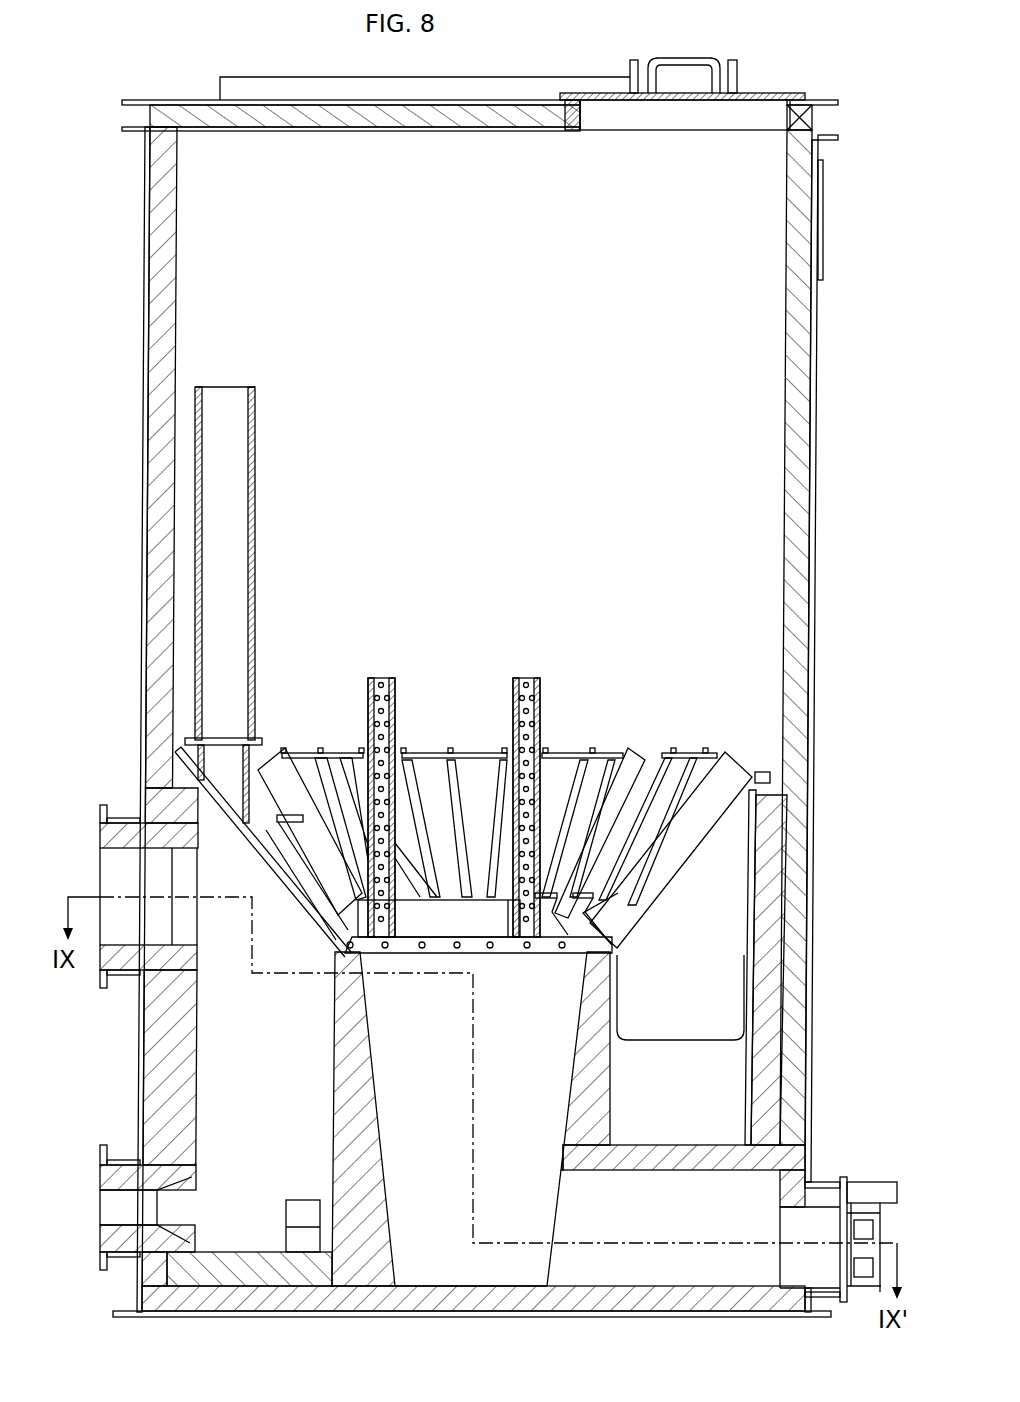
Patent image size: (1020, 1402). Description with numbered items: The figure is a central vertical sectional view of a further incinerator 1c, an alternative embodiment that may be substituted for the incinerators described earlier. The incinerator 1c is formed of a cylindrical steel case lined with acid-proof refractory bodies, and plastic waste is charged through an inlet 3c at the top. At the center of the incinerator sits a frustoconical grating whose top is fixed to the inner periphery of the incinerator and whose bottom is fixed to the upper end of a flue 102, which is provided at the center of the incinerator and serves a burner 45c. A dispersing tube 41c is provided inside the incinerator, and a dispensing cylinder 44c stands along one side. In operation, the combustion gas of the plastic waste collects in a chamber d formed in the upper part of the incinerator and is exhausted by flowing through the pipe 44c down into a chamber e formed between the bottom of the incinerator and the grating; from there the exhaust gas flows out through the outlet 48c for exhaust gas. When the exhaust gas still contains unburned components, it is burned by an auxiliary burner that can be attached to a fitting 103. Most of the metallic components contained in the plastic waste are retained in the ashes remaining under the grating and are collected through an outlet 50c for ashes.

The incinerator 1c is at (816, 541).
The inlet 3c is at (678, 122).
The chamber d is at (750, 367).
The dispensing cylinder 44c is at (235, 480).
The dispersing tube 41c is at (381, 690).
The outlet for exhaust gas 48c is at (117, 873).
The chamber e is at (205, 1048).
The fitting 103 is at (135, 1248).
The outlet for ashes 50c is at (260, 1318).
The flue 102 is at (428, 1250).
The burner 45c is at (864, 1207).